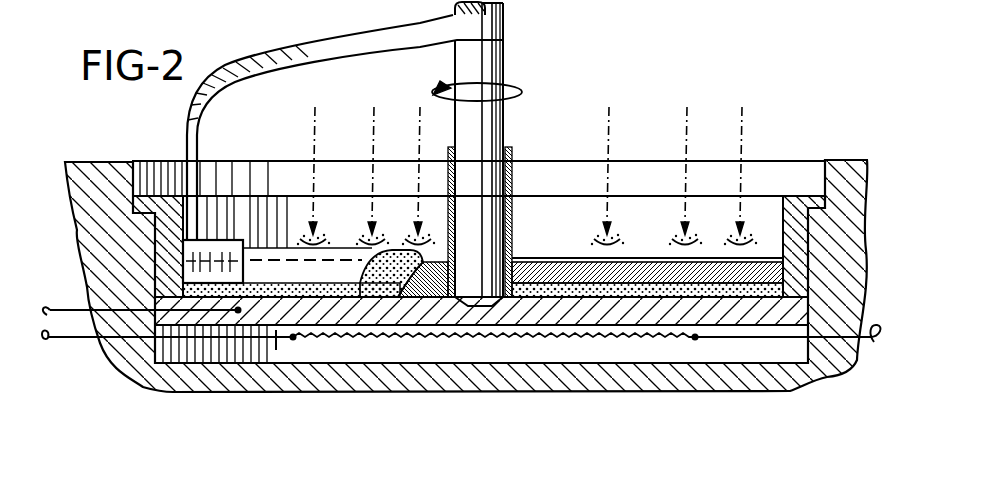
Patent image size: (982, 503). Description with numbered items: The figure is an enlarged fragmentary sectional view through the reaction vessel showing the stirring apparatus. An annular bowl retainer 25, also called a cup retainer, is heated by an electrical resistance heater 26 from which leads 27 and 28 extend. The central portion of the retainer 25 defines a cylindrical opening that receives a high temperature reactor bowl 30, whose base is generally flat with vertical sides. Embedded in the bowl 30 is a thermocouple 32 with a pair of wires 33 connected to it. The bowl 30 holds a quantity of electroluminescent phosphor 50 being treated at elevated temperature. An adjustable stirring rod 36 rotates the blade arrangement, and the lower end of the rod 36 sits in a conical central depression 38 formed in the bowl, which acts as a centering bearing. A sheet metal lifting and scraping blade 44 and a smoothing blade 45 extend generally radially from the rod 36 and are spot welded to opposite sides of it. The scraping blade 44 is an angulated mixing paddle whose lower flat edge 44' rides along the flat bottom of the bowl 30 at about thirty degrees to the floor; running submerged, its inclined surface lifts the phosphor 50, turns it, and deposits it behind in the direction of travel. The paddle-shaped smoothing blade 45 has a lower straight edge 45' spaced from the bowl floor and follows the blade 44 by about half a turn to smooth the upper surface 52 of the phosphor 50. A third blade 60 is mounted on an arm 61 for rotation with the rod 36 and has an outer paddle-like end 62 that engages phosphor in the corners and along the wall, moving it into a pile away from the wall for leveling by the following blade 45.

The annular bowl retainer 25 is at (838, 188).
The electrical resistance heater 26 is at (580, 341).
The lead 27 is at (85, 338).
The lead 28 is at (864, 341).
The high temperature reactor bowl 30 is at (797, 178).
The thermocouple 32 is at (240, 312).
The wires 33 is at (50, 308).
The stirring rod 36 is at (497, 52).
The conical central depression 38 is at (490, 306).
The lifting and scraping blade 44 is at (391, 341).
The lower flat edge 44' is at (430, 362).
The smoothing blade 45 is at (647, 240).
The lower straight edge 45' is at (483, 362).
The electroluminescent phosphor 50 is at (637, 283).
The upper surface 52 is at (702, 255).
The third blade 60 is at (290, 36).
The arm 61 is at (318, 58).
The paddle-like end 62 is at (233, 242).